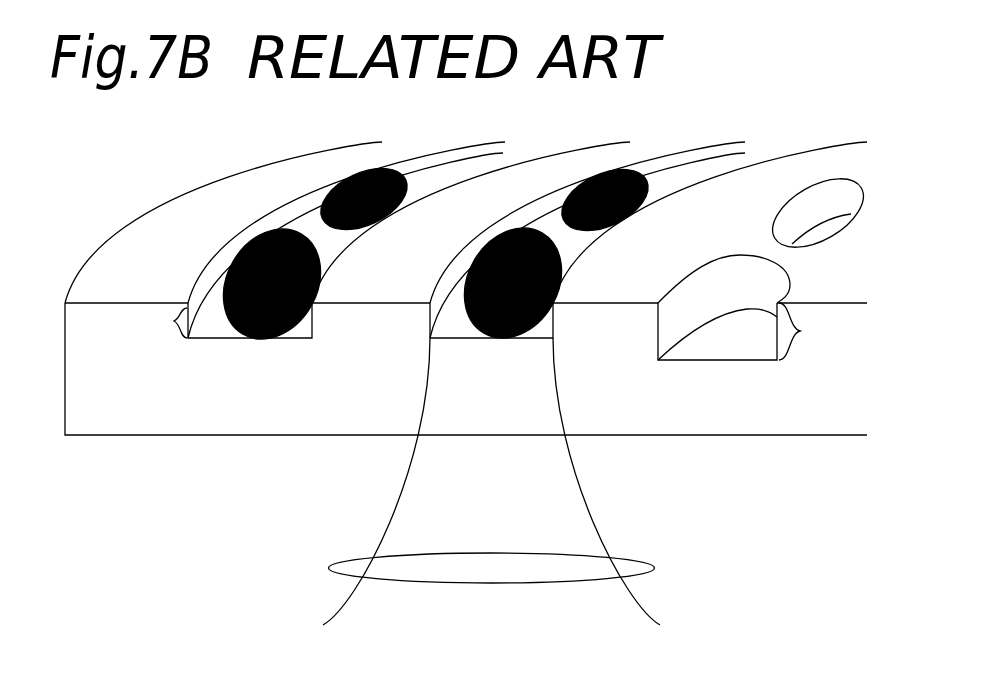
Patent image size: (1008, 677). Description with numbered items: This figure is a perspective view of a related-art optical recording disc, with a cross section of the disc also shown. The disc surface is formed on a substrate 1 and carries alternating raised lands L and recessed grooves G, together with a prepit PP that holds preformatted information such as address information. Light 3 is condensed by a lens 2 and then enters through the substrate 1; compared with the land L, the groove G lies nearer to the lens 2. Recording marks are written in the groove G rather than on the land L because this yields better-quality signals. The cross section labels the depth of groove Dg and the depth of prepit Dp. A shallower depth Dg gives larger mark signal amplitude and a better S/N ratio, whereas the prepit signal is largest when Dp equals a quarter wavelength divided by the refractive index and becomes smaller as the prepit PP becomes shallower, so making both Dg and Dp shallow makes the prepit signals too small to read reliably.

The substrate 1 is at (196, 426).
The lens 2 is at (483, 584).
The light 3 is at (406, 489).
The land L is at (219, 326).
The groove G is at (527, 262).
The depth of groove Dg is at (158, 326).
The prepit PP is at (766, 262).
The depth of prepit Dp is at (811, 331).